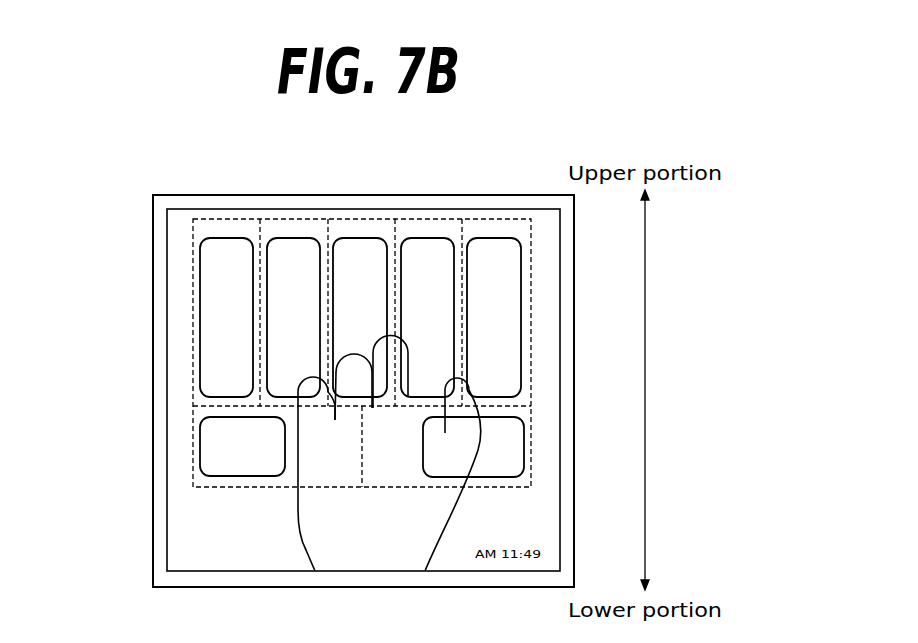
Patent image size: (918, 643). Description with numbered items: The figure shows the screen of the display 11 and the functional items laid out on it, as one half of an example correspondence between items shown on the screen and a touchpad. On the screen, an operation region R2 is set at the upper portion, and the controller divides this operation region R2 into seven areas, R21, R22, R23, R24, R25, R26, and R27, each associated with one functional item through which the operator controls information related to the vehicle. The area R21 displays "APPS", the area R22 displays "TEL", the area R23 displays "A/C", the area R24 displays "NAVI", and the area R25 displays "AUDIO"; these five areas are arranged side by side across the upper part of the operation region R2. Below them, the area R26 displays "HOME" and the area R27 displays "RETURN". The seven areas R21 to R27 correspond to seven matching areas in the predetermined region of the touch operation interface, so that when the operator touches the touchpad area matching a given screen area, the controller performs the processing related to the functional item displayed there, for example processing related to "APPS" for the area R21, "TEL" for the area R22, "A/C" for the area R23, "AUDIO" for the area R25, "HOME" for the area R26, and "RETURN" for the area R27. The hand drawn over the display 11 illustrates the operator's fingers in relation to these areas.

The display 11 is at (142, 260).
The operation region R2 is at (532, 312).
The area R21 is at (227, 232).
The area R22 is at (292, 232).
The area R23 is at (358, 232).
The area R24 is at (427, 232).
The area R25 is at (493, 232).
The area R26 is at (241, 488).
The area R27 is at (485, 481).